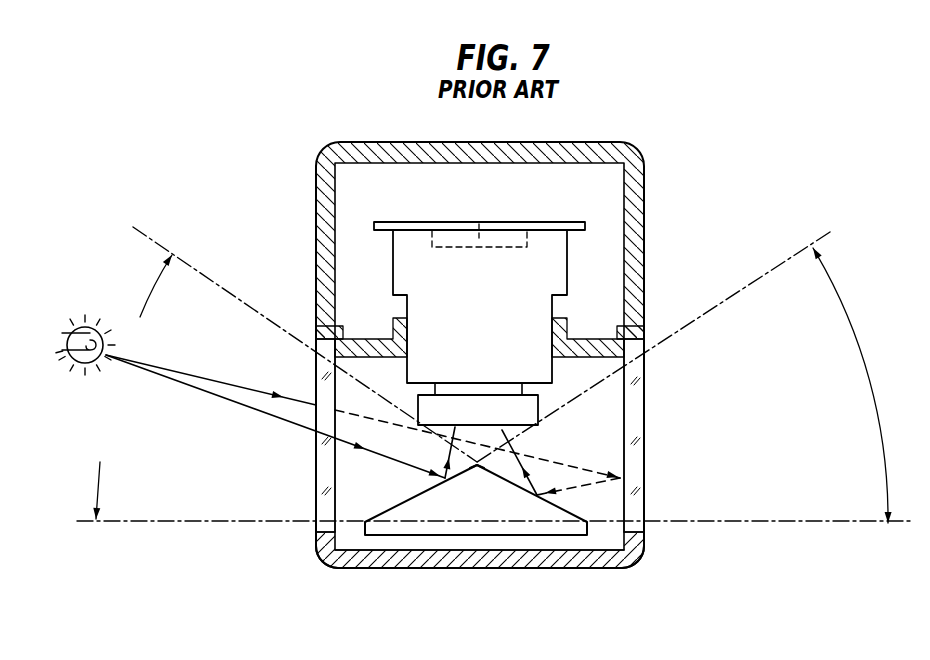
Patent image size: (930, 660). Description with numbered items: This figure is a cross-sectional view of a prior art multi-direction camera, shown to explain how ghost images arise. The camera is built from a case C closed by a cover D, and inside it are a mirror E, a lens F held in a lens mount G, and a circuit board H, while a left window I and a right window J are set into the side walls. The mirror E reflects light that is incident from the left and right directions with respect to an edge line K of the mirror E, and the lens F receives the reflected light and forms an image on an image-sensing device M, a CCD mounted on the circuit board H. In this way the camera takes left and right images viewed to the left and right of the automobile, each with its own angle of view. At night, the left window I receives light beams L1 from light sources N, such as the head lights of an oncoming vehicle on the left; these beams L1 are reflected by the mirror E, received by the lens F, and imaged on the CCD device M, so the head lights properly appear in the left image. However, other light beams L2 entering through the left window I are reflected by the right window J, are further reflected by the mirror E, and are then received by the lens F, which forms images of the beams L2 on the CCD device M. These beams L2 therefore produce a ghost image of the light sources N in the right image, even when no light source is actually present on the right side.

The case C is at (402, 142).
The cover D is at (378, 568).
The mirror E is at (517, 517).
The lens F is at (523, 412).
The lens mount G is at (545, 250).
The circuit board H is at (432, 222).
The left window I is at (313, 488).
The right window J is at (635, 467).
The edge line of the mirror K is at (477, 467).
The image-sensing device M is at (479, 224).
The light sources N is at (70, 356).
The light beams L1 is at (233, 403).
The light beams L2 is at (240, 387).